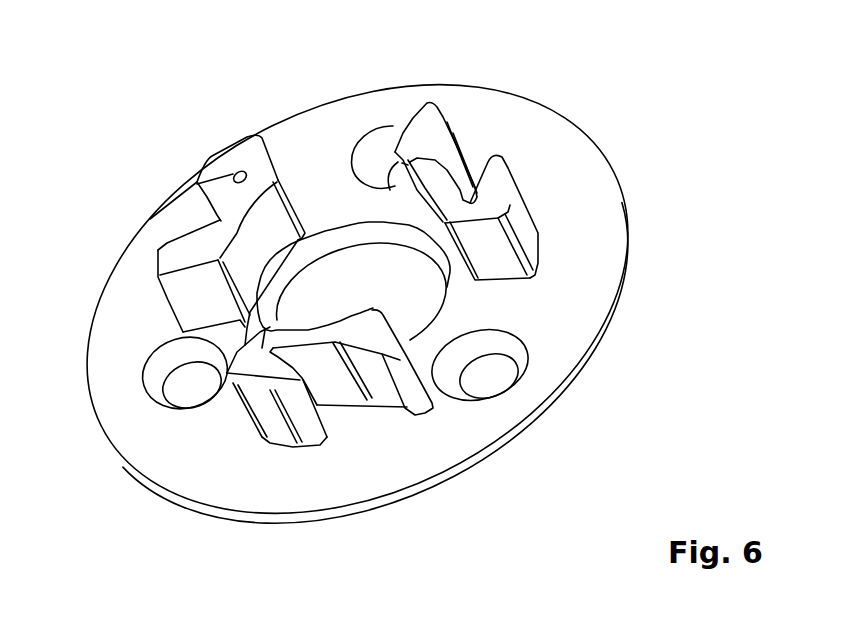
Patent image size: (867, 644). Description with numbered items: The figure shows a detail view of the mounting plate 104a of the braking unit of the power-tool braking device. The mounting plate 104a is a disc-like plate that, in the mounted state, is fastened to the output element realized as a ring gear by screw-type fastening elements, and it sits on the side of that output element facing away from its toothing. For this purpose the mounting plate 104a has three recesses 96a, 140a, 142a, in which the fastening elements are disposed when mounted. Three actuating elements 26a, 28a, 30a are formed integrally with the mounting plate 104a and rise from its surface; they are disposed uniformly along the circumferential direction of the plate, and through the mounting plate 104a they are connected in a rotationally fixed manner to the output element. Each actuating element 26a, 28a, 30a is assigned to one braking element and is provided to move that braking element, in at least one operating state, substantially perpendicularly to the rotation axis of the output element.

The actuating element 26a is at (223, 221).
The actuating element 28a is at (445, 177).
The actuating element 30a is at (317, 337).
The recess 96a is at (180, 387).
The mounting plate 104a is at (575, 185).
The recess 140a is at (395, 168).
The recess 142a is at (497, 380).